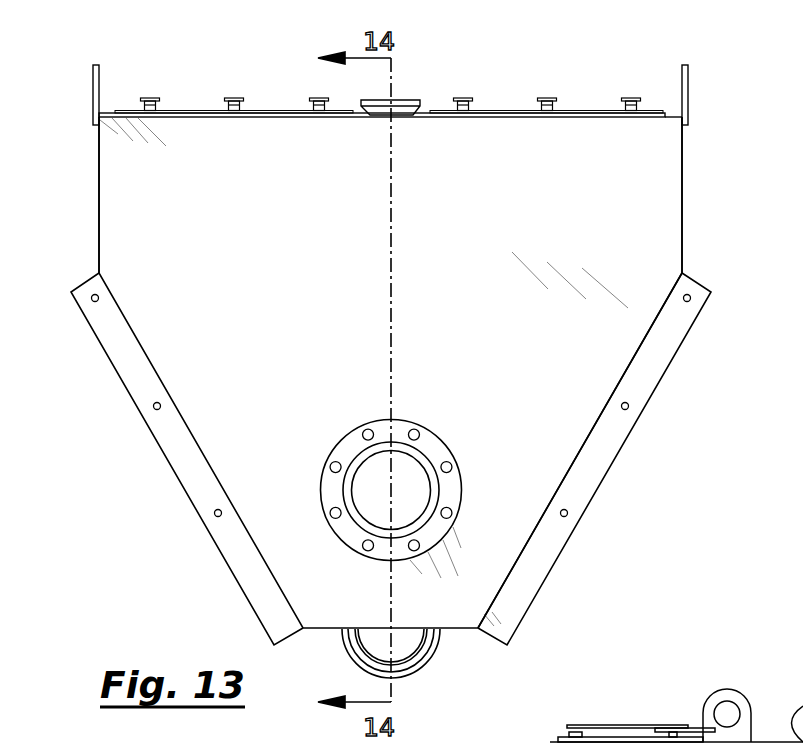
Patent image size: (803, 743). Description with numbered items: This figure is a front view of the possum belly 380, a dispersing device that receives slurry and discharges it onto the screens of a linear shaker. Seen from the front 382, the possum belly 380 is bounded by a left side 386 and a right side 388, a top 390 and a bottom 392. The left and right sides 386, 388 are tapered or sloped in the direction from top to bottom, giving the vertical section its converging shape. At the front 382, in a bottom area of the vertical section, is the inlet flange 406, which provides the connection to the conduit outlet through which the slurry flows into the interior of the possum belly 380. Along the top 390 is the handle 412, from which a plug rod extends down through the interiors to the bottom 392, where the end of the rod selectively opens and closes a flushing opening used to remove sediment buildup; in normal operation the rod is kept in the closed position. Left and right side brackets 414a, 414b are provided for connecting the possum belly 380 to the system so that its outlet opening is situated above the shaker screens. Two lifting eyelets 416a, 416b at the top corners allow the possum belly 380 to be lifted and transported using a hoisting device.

The possum belly 380 is at (312, 239).
The front 382 is at (567, 330).
The left side 386 is at (684, 200).
The right side 388 is at (99, 200).
The top 390 is at (426, 113).
The bottom 392 is at (454, 632).
The inlet flange 406 is at (447, 497).
The handle 412 is at (403, 103).
The left side bracket 414a is at (596, 478).
The right side bracket 414b is at (200, 480).
The lifting eyelet 416a is at (688, 80).
The lifting eyelet 416b is at (93, 82).